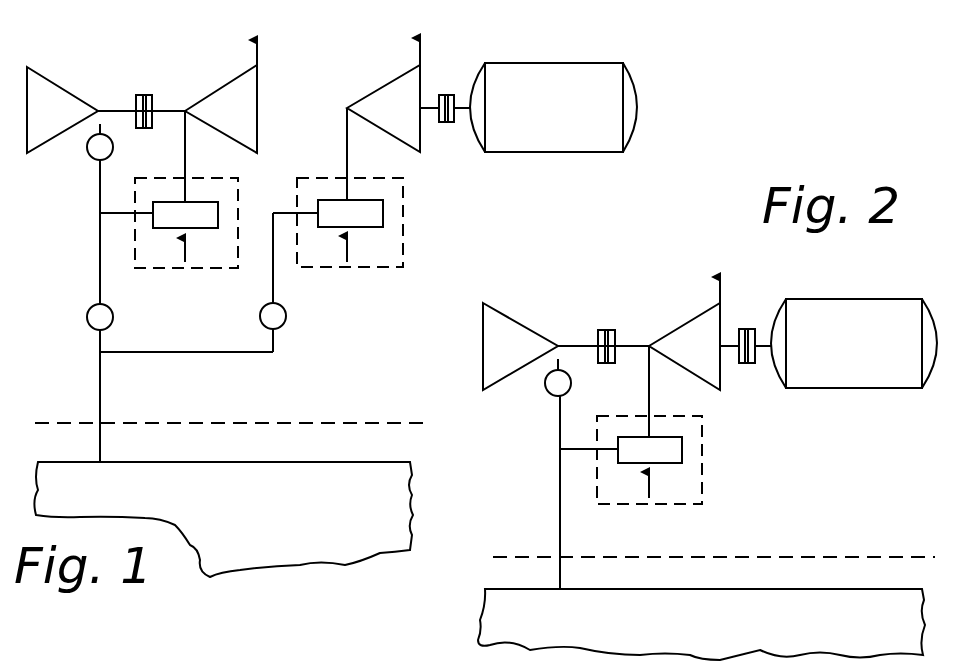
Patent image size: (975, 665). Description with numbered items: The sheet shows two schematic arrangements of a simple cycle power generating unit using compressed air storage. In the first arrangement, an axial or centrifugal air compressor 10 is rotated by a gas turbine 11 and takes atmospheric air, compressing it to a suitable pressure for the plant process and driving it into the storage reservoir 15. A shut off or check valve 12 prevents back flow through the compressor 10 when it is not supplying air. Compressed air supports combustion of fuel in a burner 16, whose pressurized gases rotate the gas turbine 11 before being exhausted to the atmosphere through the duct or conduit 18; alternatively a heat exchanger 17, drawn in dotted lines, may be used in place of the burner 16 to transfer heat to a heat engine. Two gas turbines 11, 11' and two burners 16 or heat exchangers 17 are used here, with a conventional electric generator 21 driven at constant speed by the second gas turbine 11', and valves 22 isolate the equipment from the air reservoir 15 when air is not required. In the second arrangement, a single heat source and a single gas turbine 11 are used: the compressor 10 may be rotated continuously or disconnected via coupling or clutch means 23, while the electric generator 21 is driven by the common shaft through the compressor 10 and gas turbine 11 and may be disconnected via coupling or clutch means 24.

In FIG. 1, the air compressor 10 is at (57, 121).
In FIG. 2, the air compressor 10 is at (516, 356).
In FIG. 1, the gas turbine 11 is at (221, 109).
In FIG. 2, the gas turbine 11 is at (684, 346).
In FIG. 1, the second gas turbine 11' is at (383, 108).
In FIG. 1, the check valve 12 is at (87, 151).
In FIG. 2, the check valve 12 is at (545, 389).
In FIG. 1, the storage reservoir 15 is at (284, 498).
In FIG. 2, the storage reservoir 15 is at (739, 629).
In FIG. 1, the burner 16 is at (218, 212).
In FIG. 2, the burner 16 is at (682, 446).
In FIG. 1, the heat exchanger 17 is at (204, 268).
In FIG. 2, the heat exchanger 17 is at (702, 470).
In FIG. 1, the exhaust duct 18 is at (259, 55).
In FIG. 2, the exhaust duct 18 is at (722, 293).
In FIG. 1, the electric generator 21 is at (568, 116).
In FIG. 2, the electric generator 21 is at (858, 353).
In FIG. 1, the isolation valve 22 is at (113, 317).
In FIG. 2, the clutch means 23 is at (617, 310).
In FIG. 2, the clutch means 24 is at (760, 314).